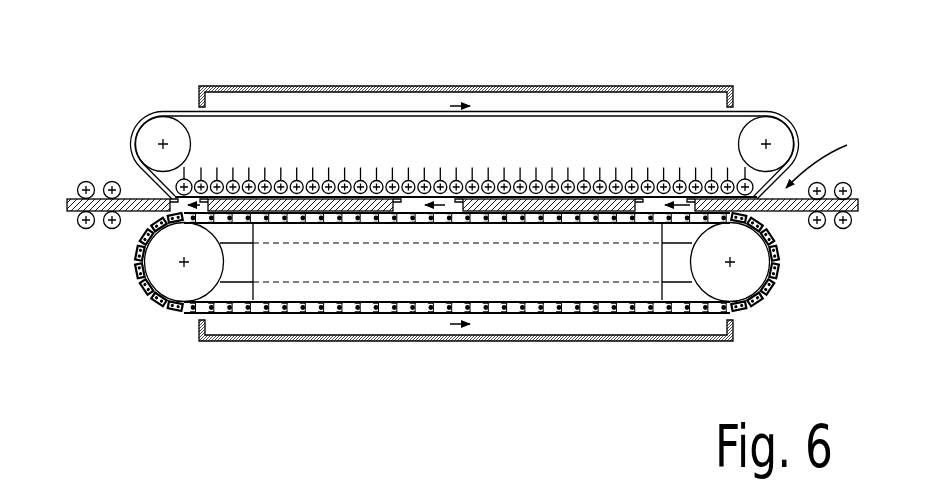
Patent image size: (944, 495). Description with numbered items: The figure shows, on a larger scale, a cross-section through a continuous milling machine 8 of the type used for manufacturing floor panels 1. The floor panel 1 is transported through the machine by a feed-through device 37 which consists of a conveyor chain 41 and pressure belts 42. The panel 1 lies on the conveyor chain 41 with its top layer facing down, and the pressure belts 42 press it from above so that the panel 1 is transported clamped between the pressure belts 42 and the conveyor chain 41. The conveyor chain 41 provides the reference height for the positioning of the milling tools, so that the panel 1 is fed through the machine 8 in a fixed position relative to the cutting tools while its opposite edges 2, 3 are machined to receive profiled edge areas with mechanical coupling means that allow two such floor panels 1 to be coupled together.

The floor panel 1 is at (137, 201).
The long opposite edge 2 is at (644, 198).
The long opposite edge 3 is at (452, 197).
The second continuous milling machine 8 is at (712, 86).
The feed-through device 37 is at (825, 152).
The conveyor chain 41 is at (145, 293).
The pressure belts 42 is at (176, 111).